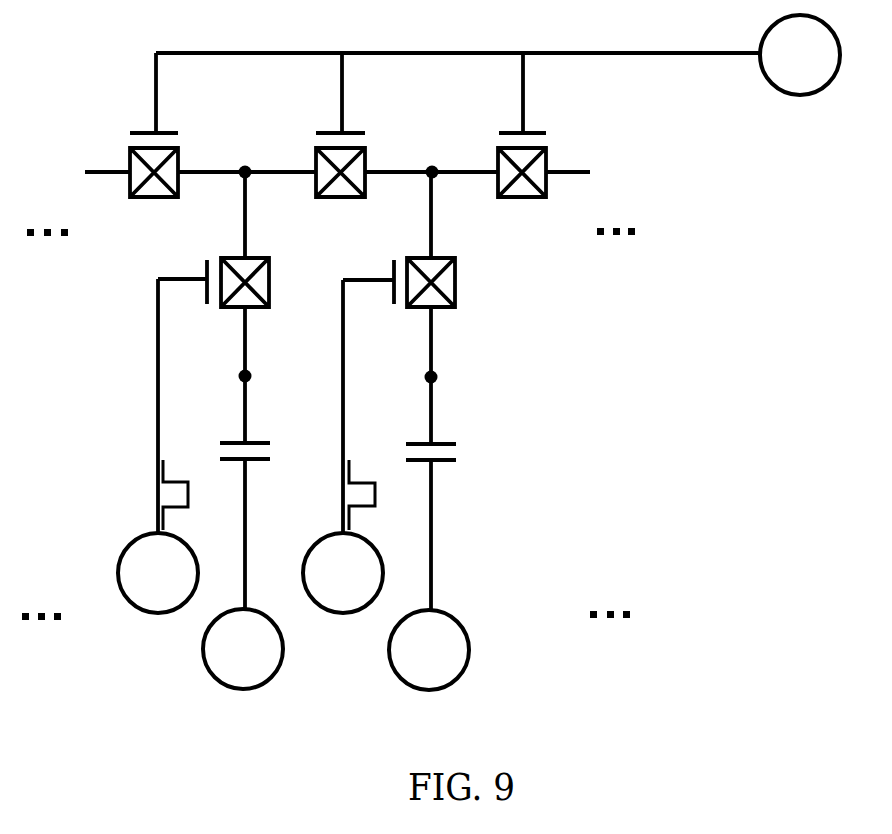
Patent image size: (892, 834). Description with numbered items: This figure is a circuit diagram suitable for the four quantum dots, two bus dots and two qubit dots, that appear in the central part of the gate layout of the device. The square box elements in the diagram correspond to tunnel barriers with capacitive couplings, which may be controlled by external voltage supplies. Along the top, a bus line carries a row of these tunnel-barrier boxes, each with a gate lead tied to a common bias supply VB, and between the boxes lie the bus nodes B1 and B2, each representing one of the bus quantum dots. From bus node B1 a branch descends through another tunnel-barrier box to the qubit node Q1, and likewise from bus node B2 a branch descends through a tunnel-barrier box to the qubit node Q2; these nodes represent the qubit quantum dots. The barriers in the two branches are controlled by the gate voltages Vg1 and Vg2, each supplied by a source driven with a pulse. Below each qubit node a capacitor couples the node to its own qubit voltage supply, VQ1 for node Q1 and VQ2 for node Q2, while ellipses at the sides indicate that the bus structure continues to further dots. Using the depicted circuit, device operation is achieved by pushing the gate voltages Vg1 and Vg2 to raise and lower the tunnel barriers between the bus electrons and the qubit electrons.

The bus node B1 is at (248, 147).
The bus node B2 is at (434, 146).
The qubit node Q1 is at (277, 374).
The qubit node Q2 is at (465, 376).
The bus voltage supply VB is at (800, 55).
The gate voltage Vg1 is at (158, 573).
The gate voltage Vg2 is at (343, 573).
The qubit voltage supply VQ1 is at (243, 649).
The qubit voltage supply VQ2 is at (429, 650).